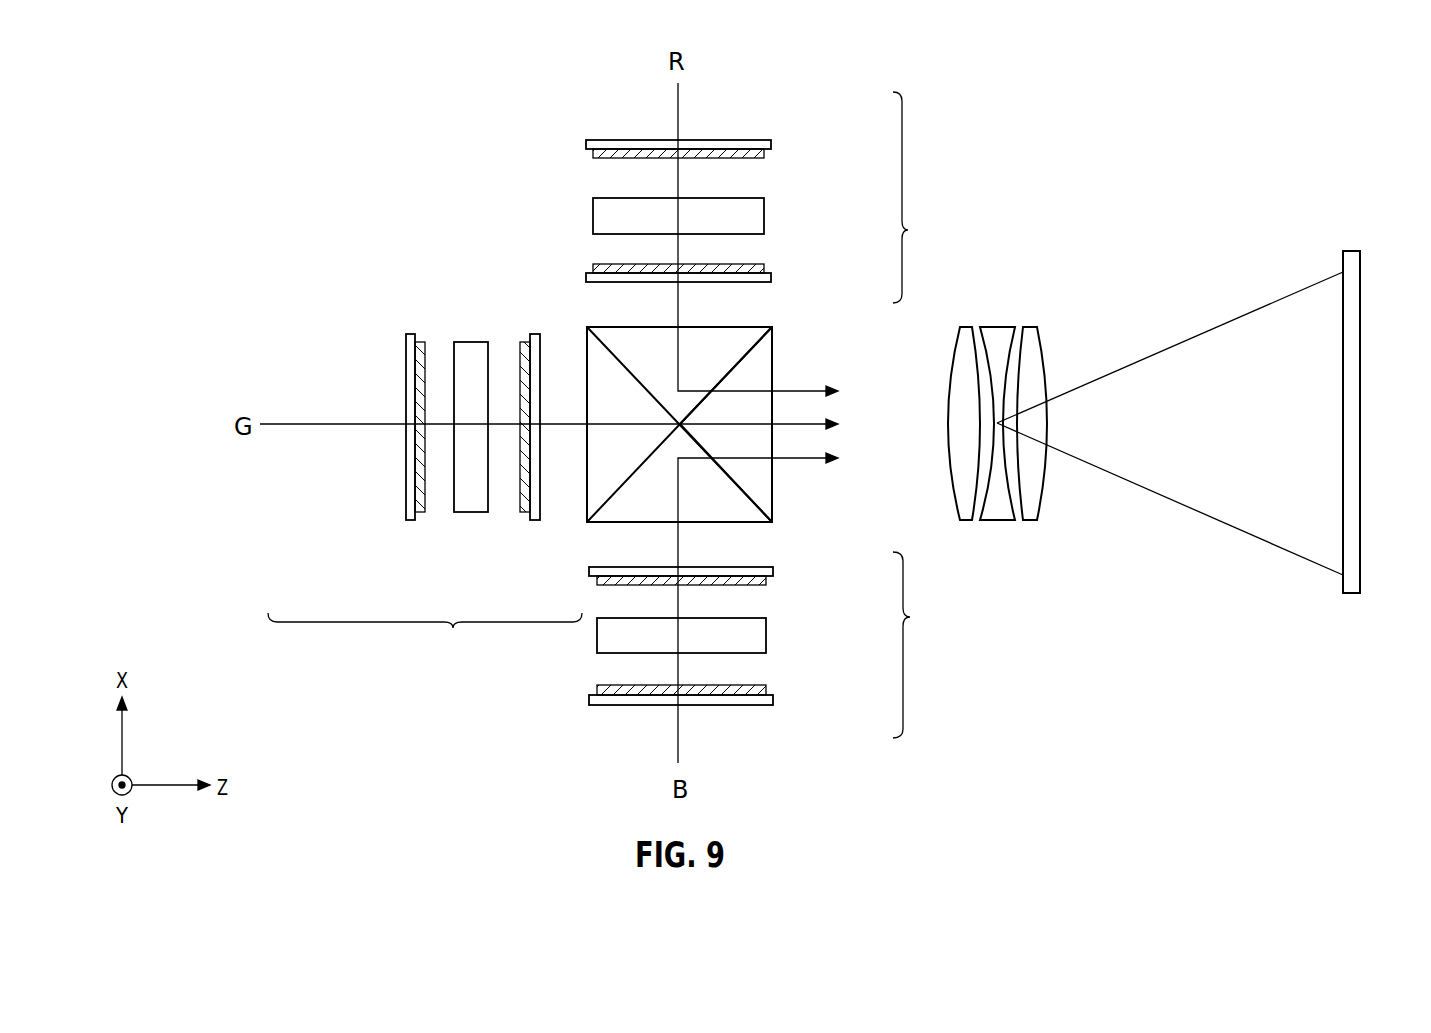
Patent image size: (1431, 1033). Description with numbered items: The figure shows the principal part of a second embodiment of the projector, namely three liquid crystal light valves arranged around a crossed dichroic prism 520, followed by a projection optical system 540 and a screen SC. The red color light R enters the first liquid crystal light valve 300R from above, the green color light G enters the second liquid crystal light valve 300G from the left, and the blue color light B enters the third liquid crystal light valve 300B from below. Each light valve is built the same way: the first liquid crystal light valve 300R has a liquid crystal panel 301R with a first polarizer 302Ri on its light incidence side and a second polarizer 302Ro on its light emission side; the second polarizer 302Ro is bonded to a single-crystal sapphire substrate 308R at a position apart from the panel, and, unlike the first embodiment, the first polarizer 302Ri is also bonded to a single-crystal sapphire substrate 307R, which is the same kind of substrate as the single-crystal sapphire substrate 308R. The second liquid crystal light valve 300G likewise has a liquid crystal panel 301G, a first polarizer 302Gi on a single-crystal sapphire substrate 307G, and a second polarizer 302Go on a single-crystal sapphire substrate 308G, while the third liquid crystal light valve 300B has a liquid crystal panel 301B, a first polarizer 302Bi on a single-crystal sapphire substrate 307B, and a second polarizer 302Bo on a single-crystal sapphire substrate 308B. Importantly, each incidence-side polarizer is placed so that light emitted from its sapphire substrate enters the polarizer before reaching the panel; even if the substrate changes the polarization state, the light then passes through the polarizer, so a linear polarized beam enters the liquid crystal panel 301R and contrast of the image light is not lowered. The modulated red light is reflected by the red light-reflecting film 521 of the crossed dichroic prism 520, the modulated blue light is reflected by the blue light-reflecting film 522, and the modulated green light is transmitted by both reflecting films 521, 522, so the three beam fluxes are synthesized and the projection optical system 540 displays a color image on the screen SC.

The single-crystal sapphire substrate 307R is at (771, 144).
The first polarizer 302Ri is at (764, 156).
The liquid crystal panel 301R is at (764, 216).
The second polarizer 302Ro is at (764, 268).
The single-crystal sapphire substrate 308R is at (771, 278).
The first liquid crystal light valve 300R is at (924, 197).
The single-crystal sapphire substrate 307G is at (410, 520).
The first polarizer 302Gi is at (419, 512).
The liquid crystal panel 301G is at (468, 512).
The second polarizer 302Go is at (526, 512).
The single-crystal sapphire substrate 308G is at (536, 520).
The second liquid crystal light valve 300G is at (425, 636).
The single-crystal sapphire substrate 307B is at (773, 700).
The first polarizer 302Bi is at (766, 690).
The liquid crystal panel 301B is at (766, 636).
The second polarizer 302Bo is at (766, 580).
The single-crystal sapphire substrate 308B is at (773, 571).
The third liquid crystal light valve 300B is at (925, 645).
The crossed dichroic prism 520 is at (760, 348).
The red light-reflecting film 521 is at (738, 485).
The blue light-reflecting film 522 is at (733, 370).
The projection optical system 540 is at (1000, 326).
The screen SC is at (1360, 278).